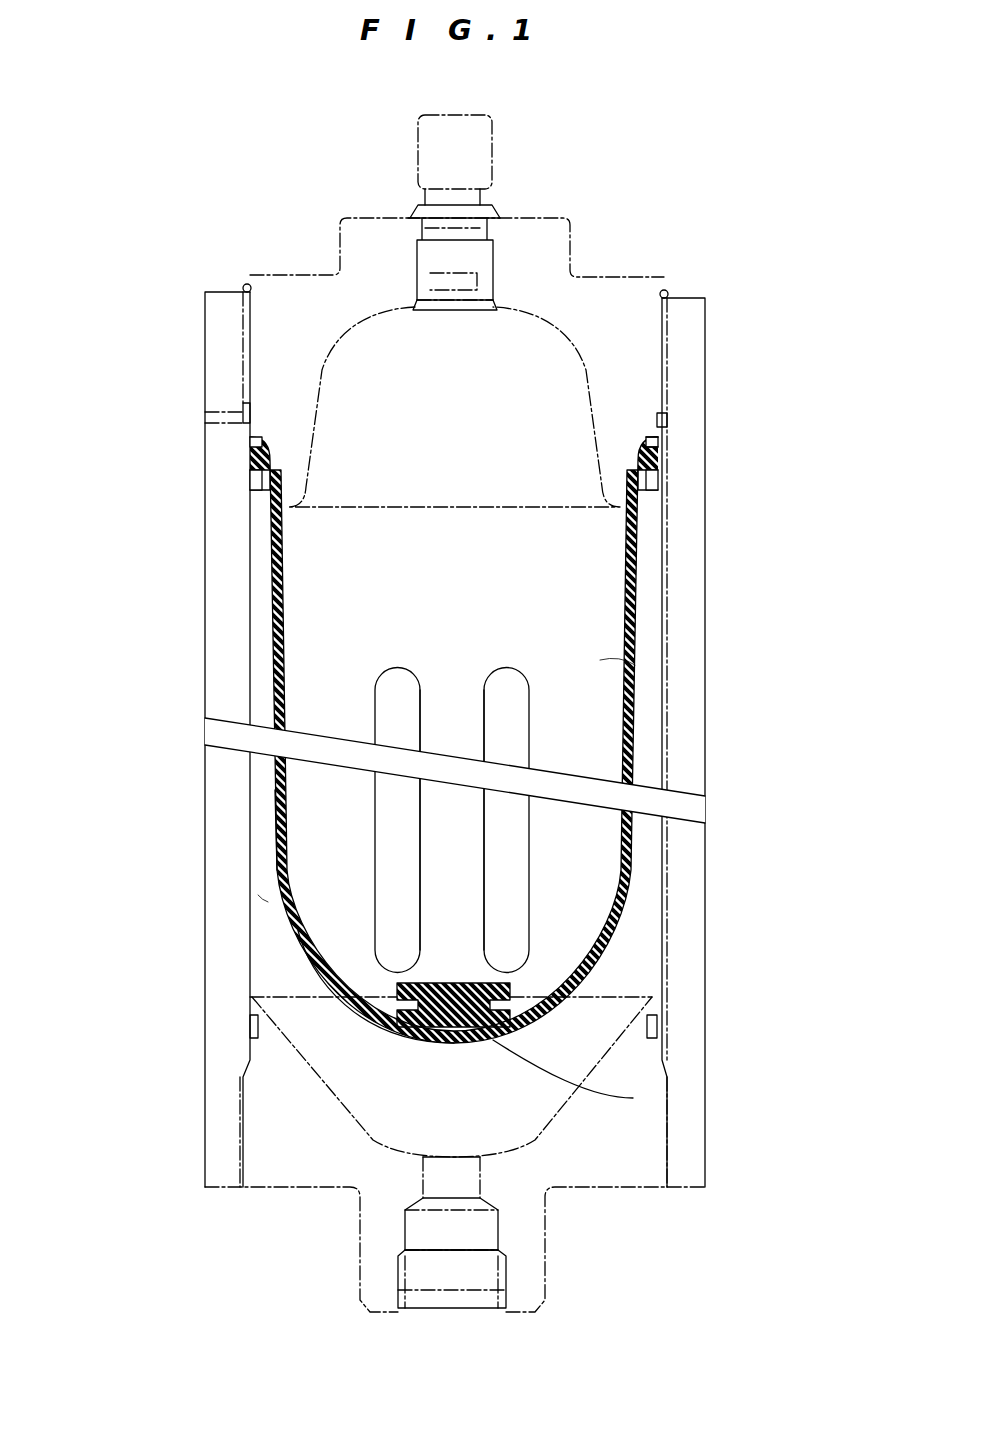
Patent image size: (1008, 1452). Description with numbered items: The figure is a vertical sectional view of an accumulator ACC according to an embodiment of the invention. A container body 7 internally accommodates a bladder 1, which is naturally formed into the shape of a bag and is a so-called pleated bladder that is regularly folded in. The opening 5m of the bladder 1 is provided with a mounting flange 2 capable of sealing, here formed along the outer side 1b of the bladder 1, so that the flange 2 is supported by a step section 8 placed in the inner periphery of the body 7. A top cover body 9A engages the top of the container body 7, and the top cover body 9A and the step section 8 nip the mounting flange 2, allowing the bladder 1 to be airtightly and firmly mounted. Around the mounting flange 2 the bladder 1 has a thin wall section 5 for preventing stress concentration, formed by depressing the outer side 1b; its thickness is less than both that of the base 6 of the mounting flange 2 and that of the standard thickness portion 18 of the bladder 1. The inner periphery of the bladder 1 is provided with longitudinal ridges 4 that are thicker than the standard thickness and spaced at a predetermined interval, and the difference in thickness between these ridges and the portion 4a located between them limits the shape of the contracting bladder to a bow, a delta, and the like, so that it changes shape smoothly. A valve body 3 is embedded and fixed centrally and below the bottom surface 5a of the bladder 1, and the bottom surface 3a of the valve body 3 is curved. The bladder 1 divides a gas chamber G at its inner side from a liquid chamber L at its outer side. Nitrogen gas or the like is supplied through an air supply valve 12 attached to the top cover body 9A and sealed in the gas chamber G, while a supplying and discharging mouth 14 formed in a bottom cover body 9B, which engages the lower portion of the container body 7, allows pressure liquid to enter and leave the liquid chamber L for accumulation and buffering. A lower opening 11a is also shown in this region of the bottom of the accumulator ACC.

The bladder 1 is at (636, 753).
The outer side of the bladder 1b is at (276, 545).
The flange 2 is at (662, 458).
The valve body 3 is at (450, 1035).
The bottom surface of the valve body 3a is at (633, 1098).
The longitudinal ridges 4 is at (507, 667).
The portion located between the longitudinal ridges 4a is at (463, 907).
The thin wall section 5 is at (634, 560).
The bottom surface of the bladder 5a is at (412, 993).
The opening 5m is at (252, 462).
The base of the mounting flange 6 is at (632, 478).
The container body 7 is at (222, 669).
The step section 8 is at (256, 479).
The top cover body 9A is at (356, 262).
The bottom cover body 9B is at (332, 1170).
The lower opening 11a is at (540, 1127).
The air supply valve 12 is at (468, 226).
The supplying and discharging mouth 14 is at (444, 1290).
The standard thickness portion 18 is at (277, 787).
The accumulator ACC is at (702, 278).
The gas chamber G is at (612, 670).
The liquid chamber L is at (262, 898).